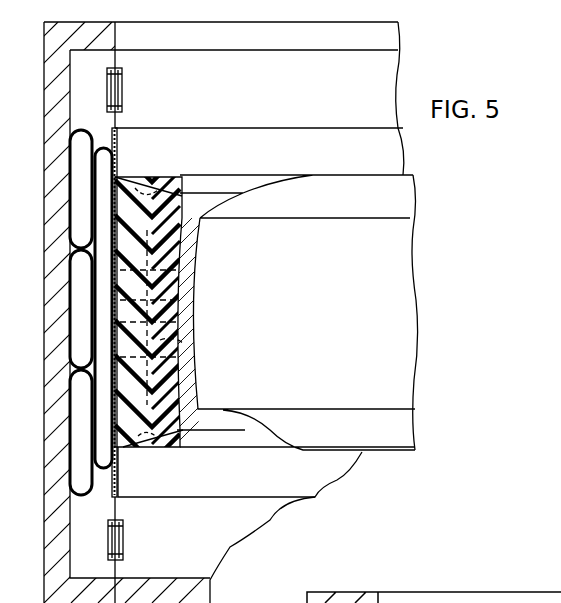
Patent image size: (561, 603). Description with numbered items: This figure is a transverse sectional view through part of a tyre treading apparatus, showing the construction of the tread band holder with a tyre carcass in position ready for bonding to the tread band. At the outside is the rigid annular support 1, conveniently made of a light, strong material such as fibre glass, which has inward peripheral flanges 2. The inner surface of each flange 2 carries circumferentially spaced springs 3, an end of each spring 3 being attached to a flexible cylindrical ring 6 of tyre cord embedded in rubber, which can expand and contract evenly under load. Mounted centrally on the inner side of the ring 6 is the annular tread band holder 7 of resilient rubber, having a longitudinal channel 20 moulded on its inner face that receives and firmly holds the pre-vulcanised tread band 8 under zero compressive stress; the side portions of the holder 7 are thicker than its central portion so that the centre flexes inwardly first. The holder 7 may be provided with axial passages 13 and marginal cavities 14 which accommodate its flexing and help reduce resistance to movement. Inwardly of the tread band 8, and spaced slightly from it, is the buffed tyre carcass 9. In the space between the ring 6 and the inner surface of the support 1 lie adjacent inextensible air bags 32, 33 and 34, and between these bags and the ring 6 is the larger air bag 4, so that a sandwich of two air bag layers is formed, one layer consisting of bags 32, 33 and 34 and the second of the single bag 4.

The rigid annular support 1 is at (58, 83).
The inward peripheral flange 2 is at (108, 44).
The spring 3 is at (123, 88).
The air bag 4 is at (118, 165).
The flexible cylindrical ring 6 is at (323, 127).
The tread band holder 7 is at (170, 430).
The tread band 8 is at (176, 268).
The tyre carcass 9 is at (360, 329).
The axial passage 13 is at (183, 360).
The marginal cavity 14 is at (144, 192).
The longitudinal channel 20 is at (176, 243).
The air bag 32 is at (76, 182).
The air bag 33 is at (76, 308).
The air bag 34 is at (78, 425).